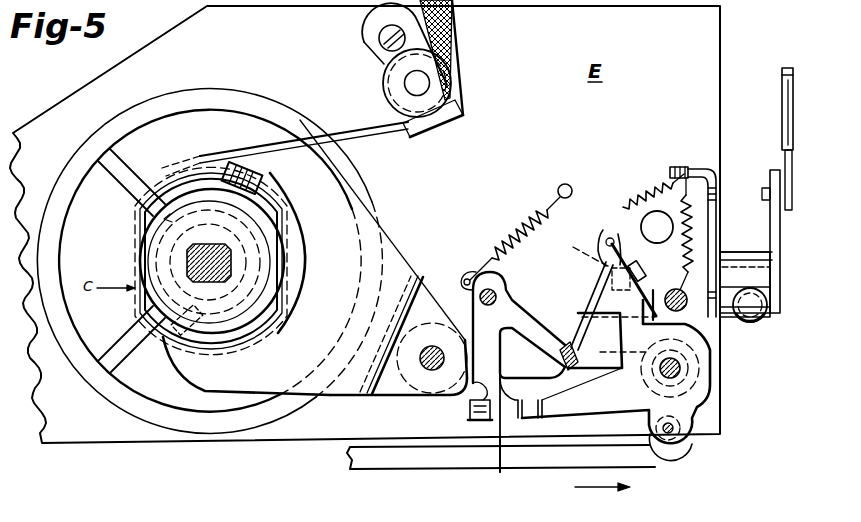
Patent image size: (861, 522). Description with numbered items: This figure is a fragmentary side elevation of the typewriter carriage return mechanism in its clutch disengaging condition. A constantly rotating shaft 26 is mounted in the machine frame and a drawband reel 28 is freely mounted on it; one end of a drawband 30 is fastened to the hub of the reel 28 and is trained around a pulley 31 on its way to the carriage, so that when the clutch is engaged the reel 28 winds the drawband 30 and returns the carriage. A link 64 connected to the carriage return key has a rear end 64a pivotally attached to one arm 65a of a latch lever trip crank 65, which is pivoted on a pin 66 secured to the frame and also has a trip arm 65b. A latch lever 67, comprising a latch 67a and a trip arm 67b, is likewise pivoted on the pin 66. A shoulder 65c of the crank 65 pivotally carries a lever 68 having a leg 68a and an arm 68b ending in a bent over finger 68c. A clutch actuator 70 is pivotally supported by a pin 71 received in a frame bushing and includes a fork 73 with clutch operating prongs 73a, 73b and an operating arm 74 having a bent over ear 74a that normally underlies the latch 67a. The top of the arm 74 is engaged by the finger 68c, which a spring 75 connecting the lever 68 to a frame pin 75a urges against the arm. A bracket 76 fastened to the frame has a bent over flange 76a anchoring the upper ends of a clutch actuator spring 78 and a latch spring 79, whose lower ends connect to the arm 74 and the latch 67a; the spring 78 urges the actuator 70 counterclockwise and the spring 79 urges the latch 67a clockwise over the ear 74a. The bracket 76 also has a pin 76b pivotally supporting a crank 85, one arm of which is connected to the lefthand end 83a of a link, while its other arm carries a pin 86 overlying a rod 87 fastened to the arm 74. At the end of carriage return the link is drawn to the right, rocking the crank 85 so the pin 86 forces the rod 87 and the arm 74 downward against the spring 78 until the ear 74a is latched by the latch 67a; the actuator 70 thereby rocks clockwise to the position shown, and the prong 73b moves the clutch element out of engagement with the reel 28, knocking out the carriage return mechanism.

The constantly rotating shaft 26 is at (210, 245).
The drawband reel 28 is at (258, 107).
The drawband 30 is at (367, 125).
The pulley 31 is at (453, 84).
The link 64 is at (433, 460).
The rear end of link 64a is at (684, 458).
The latch lever trip crank 65 is at (723, 381).
The arm of trip crank 65a is at (692, 421).
The trip arm of crank 65b is at (470, 390).
The shoulder of crank 65c is at (490, 287).
The pin 66 is at (682, 367).
The latch lever 67 is at (561, 393).
The latch 67a is at (605, 230).
The trip arm of latch lever 67b is at (470, 414).
The lever 68 is at (537, 310).
The leg of lever 68a is at (503, 470).
The arm of lever 68b is at (553, 307).
The bent over finger 68c is at (573, 253).
The clutch actuator 70 is at (427, 291).
The pin of clutch actuator 71 is at (420, 363).
The fork 73 is at (382, 258).
The clutch operating prong 73a is at (230, 168).
The clutch operating prong 73b is at (162, 338).
The operating arm 74 is at (532, 353).
The bent over ear 74a is at (672, 262).
The spring 75 is at (510, 240).
The pin 75a is at (566, 184).
The bracket 76 is at (715, 222).
The bent over flange 76a is at (678, 197).
The pin of bracket 76b is at (727, 254).
The clutch actuator spring 78 is at (712, 175).
The latch spring 79 is at (650, 197).
The lefthand end of link 83a is at (784, 103).
The crank 85 is at (769, 170).
The pin 86 is at (768, 272).
The rod 87 is at (762, 322).